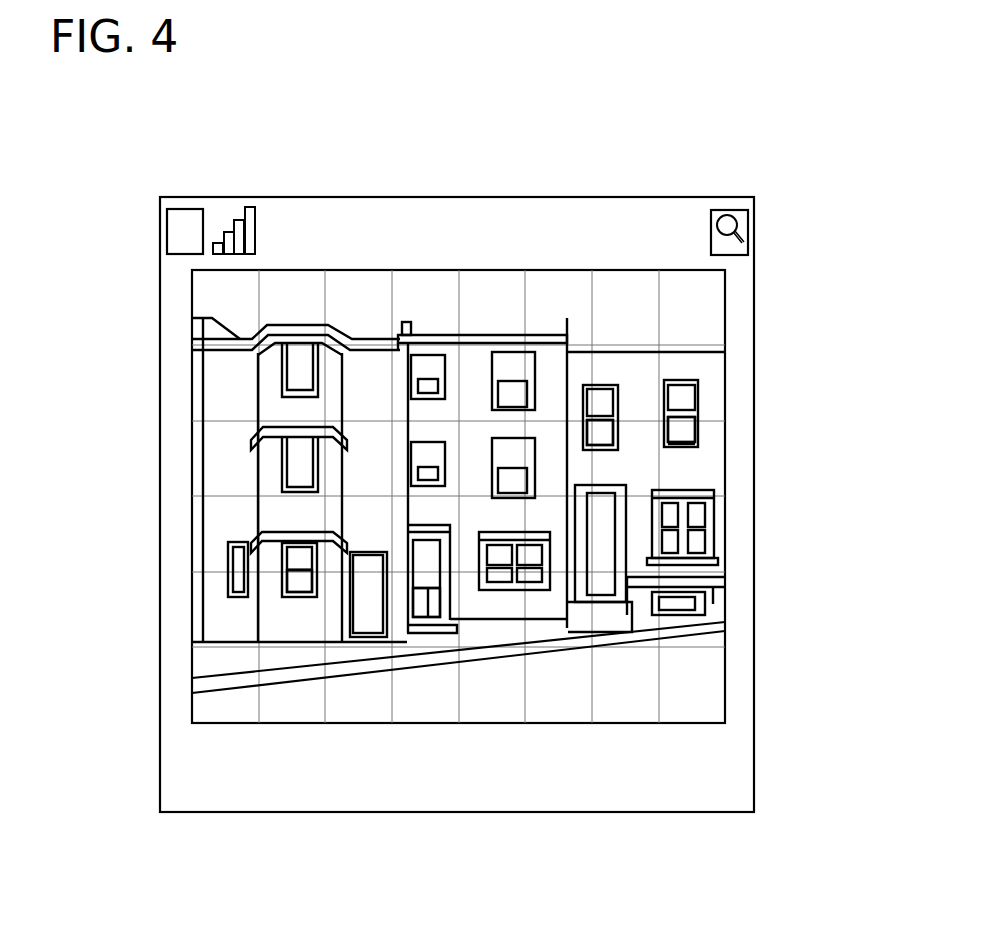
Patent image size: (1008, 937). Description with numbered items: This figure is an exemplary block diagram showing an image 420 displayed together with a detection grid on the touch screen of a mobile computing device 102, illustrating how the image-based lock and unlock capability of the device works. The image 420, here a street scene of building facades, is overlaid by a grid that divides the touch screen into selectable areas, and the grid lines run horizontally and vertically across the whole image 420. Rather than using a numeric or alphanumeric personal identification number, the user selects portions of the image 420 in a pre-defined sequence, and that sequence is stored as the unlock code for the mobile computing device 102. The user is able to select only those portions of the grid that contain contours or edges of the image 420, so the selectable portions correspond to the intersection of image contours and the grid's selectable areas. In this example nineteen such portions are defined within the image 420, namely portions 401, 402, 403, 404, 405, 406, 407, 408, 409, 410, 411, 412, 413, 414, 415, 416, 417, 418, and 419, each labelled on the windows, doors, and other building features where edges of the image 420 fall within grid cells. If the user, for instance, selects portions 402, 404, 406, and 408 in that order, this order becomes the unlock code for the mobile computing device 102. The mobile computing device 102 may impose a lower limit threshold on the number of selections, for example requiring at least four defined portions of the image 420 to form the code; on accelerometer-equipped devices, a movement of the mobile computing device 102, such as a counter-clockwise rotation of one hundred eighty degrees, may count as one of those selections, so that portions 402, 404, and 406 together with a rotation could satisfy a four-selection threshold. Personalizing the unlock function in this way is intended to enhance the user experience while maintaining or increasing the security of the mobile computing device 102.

The mobile computing device 102 is at (754, 777).
The image 420 is at (298, 319).
The portion 401 is at (268, 390).
The portion 402 is at (290, 462).
The portion 403 is at (288, 560).
The portion 404 is at (297, 588).
The portion 405 is at (367, 620).
The portion 406 is at (425, 365).
The portion 407 is at (430, 453).
The portion 408 is at (433, 610).
The portion 409 is at (430, 535).
The portion 410 is at (498, 552).
The portion 411 is at (508, 447).
The portion 412 is at (510, 363).
The portion 413 is at (598, 398).
The portion 414 is at (605, 437).
The portion 415 is at (605, 522).
The portion 416 is at (682, 396).
The portion 417 is at (688, 428).
The portion 418 is at (708, 524).
The portion 419 is at (687, 605).